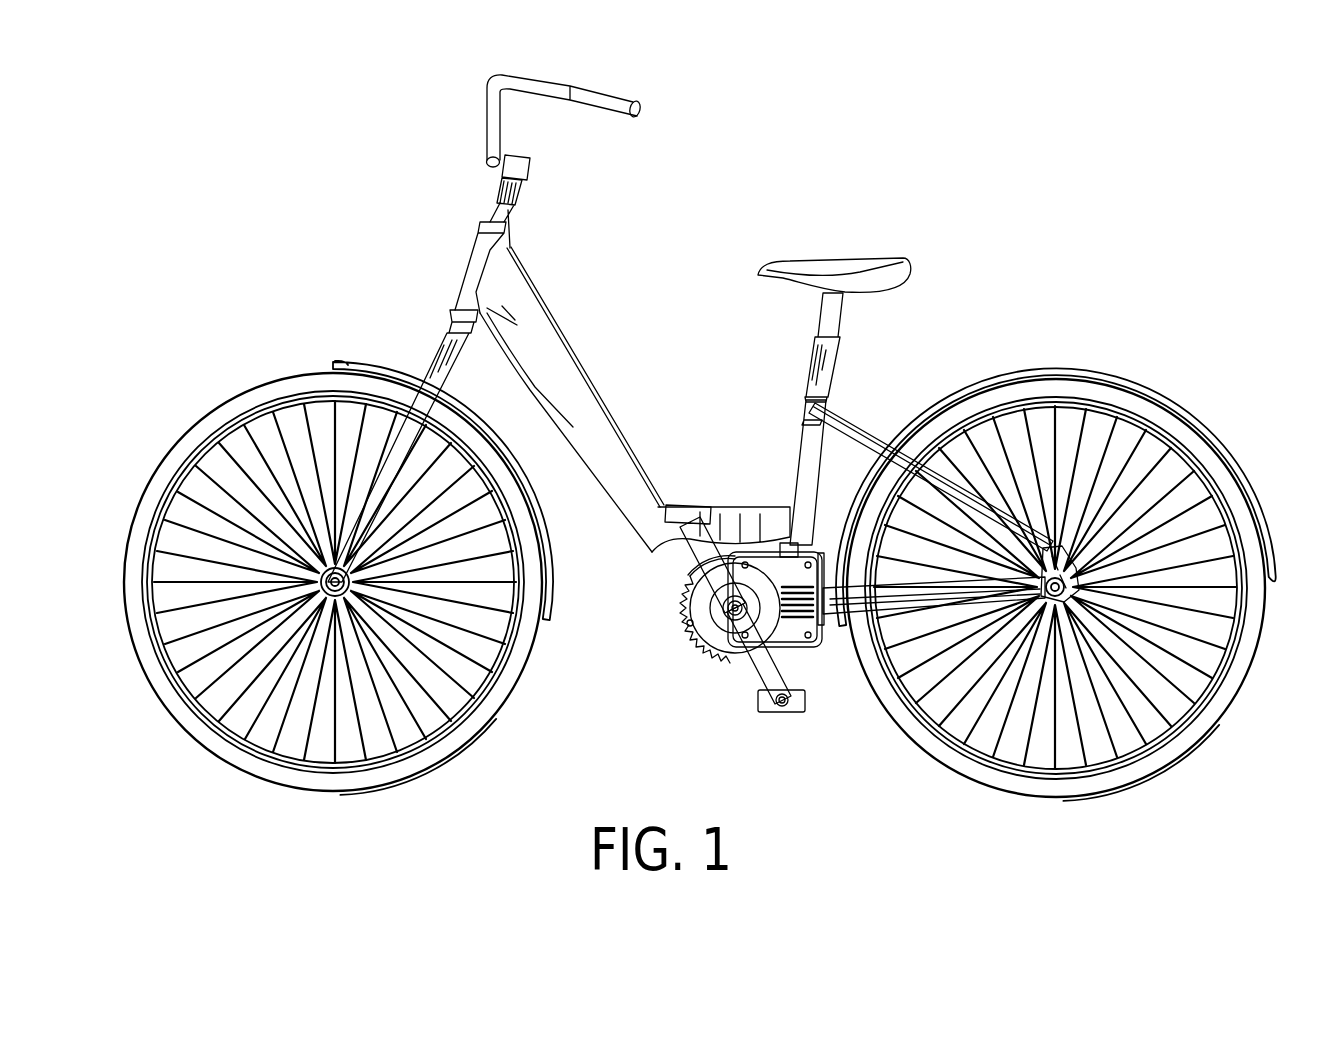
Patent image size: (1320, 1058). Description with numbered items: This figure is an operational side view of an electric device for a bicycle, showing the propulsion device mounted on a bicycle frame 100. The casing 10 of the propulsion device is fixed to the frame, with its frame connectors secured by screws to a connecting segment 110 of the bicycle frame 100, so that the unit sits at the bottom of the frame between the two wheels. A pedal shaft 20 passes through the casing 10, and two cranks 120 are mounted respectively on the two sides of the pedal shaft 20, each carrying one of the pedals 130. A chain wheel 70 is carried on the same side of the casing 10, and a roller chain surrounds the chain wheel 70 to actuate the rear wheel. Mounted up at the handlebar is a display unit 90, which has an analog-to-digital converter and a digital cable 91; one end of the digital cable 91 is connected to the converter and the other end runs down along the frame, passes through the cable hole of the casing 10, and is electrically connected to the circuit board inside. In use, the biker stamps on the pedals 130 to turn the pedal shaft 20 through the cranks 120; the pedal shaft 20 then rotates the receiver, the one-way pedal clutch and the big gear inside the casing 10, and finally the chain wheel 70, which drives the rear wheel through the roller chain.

The casing 10 is at (808, 655).
The pedal shaft 20 is at (722, 648).
The chain wheel 70 is at (737, 658).
The display unit 90 is at (545, 159).
The digital cable 91 is at (512, 243).
The bicycle frame 100 is at (845, 389).
The connecting segment 110 is at (813, 535).
The cranks 120 is at (692, 592).
The pedals 130 is at (668, 523).